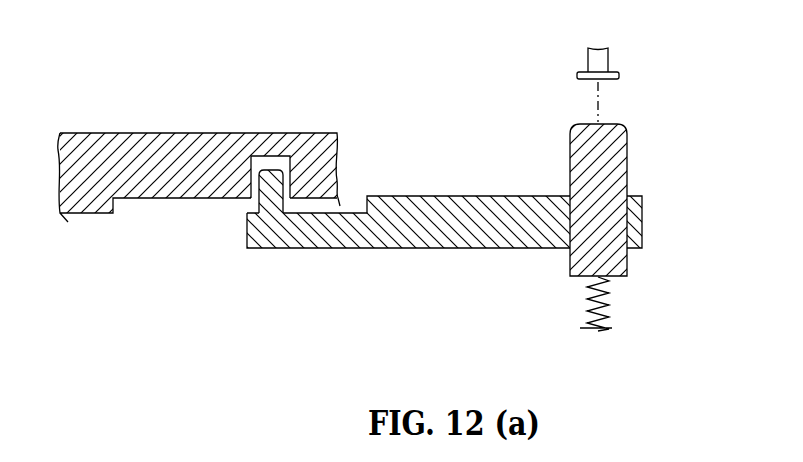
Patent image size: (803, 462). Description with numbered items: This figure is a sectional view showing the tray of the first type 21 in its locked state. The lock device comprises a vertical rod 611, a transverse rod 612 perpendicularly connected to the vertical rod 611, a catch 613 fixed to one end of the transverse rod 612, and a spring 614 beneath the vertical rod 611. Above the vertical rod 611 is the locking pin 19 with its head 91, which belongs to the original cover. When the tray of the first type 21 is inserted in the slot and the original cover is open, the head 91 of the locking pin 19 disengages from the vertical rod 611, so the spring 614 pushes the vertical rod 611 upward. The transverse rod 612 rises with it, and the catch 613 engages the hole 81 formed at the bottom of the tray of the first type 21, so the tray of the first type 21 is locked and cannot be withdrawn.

The locking pin 19 is at (573, 56).
The tray of the first type 21 is at (183, 163).
The hole 81 is at (280, 163).
The head 91 is at (596, 80).
The vertical rod 611 is at (603, 168).
The transverse rod 612 is at (412, 225).
The catch 613 is at (262, 189).
The spring 614 is at (590, 305).